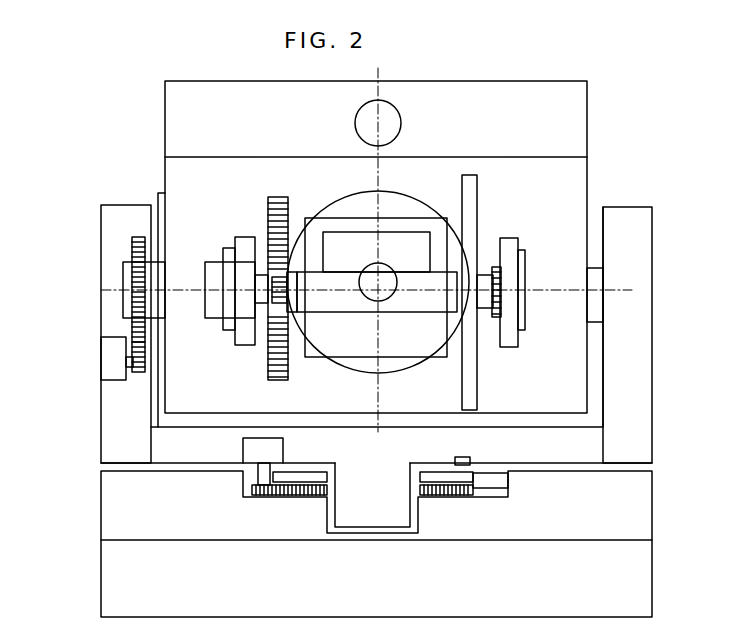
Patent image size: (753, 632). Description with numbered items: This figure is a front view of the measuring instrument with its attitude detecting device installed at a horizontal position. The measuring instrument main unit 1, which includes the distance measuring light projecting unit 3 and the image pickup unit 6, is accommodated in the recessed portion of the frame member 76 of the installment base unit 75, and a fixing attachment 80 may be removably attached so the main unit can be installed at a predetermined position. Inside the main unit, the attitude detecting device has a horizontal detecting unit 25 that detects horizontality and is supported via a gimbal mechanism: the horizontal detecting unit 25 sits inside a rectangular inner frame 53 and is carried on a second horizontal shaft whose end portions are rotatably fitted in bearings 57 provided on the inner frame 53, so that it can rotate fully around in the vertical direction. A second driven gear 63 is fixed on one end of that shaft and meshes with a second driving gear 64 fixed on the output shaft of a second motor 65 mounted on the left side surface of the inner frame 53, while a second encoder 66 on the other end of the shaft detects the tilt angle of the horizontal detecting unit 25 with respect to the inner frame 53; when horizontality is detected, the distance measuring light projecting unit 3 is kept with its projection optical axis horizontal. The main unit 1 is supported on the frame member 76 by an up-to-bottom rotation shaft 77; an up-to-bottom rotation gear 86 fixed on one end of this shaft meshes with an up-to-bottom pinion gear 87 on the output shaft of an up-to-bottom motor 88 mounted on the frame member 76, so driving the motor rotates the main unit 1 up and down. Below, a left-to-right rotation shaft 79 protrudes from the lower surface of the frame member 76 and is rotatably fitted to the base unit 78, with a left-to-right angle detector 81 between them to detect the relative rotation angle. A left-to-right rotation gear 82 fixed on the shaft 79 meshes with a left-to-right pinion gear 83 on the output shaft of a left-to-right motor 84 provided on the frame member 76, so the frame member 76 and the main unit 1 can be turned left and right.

The measuring instrument main unit 1 is at (590, 112).
The distance measuring light projecting unit 3 is at (415, 190).
The image pickup unit 6 is at (400, 106).
The horizontal detecting unit 25 is at (348, 217).
The inner frame 53 is at (510, 237).
The bearings 57 is at (525, 313).
The second driven gear 63 is at (285, 378).
The second driving gear 64 is at (275, 317).
The second motor 65 is at (215, 262).
The second encoder 66 is at (482, 203).
The installment base unit 75 is at (100, 225).
The frame member 76 is at (101, 453).
The up-to-bottom rotation shaft 77 is at (158, 193).
The base unit 78 is at (101, 512).
The left-to-right rotation shaft 79 is at (388, 505).
The fixing attachment 80 is at (101, 600).
The left-to-right angle detector 81 is at (484, 470).
The left-to-right rotation gear 82 is at (510, 497).
The left-to-right pinion gear 83 is at (242, 493).
The left-to-right motor 84 is at (243, 452).
The up-to-bottom rotation gear 86 is at (137, 238).
The up-to-bottom pinion gear 87 is at (137, 372).
The up-to-bottom motor 88 is at (101, 337).